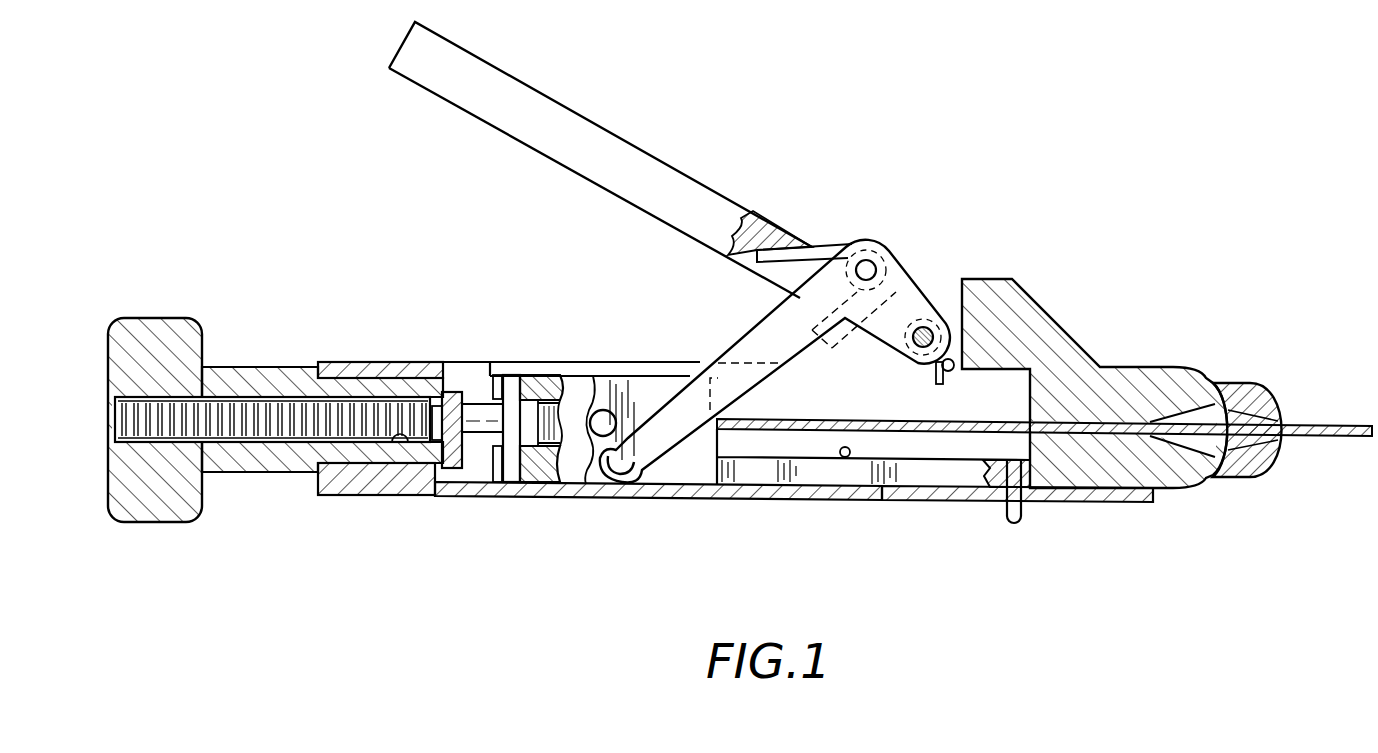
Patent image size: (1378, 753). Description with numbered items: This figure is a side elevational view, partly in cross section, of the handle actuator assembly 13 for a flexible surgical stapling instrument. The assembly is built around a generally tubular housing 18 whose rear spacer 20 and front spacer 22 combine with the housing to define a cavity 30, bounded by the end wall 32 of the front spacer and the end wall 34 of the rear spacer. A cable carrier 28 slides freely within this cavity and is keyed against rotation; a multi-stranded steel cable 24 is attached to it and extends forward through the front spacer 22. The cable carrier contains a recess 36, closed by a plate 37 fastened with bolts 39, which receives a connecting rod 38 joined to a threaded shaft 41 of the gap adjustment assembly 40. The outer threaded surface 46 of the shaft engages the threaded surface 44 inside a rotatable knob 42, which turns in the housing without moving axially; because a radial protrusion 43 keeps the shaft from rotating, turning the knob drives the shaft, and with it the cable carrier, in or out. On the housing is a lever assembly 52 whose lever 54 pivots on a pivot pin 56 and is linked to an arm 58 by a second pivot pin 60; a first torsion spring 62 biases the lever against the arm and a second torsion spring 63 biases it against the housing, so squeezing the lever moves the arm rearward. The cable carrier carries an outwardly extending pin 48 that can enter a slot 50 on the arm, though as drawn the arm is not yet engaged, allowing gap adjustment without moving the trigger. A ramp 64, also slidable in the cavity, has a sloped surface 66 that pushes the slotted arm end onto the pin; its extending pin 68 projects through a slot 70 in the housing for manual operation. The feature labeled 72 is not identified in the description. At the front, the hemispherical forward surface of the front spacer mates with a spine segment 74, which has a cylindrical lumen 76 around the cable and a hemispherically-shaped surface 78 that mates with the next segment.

The handle actuator assembly 13 is at (1096, 367).
The housing 18 is at (526, 498).
The rear spacer 20 is at (401, 362).
The front spacer 22 is at (1068, 352).
The cable 24 is at (846, 420).
The cable carrier 28 is at (622, 378).
The cavity 30 is at (814, 456).
The end wall of the front spacer 32 is at (1030, 388).
The end wall of the rear spacer 34 is at (443, 376).
The recess 36 is at (544, 400).
The plate 37 is at (511, 375).
The connecting rod 38 is at (456, 470).
The bolts 39 is at (496, 375).
The gap adjustment assembly 40 is at (250, 460).
The threaded shaft 41 is at (297, 425).
The rotatable knob 42 is at (198, 318).
The radial protrusion 43 is at (445, 403).
The threaded surface 44 is at (272, 480).
The outer threaded surface 46 is at (400, 448).
The outwardly extending pin 48 is at (602, 409).
The slot 50 is at (592, 468).
The lever assembly 52 is at (788, 236).
The lever 54 is at (620, 163).
The pivot pin 56 is at (912, 360).
The arm 58 is at (760, 346).
The second pivot pin 60 is at (866, 260).
The first torsion spring 62 is at (777, 266).
The second torsion spring 63 is at (932, 380).
The ramp 64 is at (750, 470).
The sloped surface 66 is at (645, 482).
The extending pin 68 is at (1022, 512).
The slot 70 is at (937, 490).
The nose 72 is at (1180, 364).
The spine segment 74 is at (1255, 478).
The cylindrical lumen 76 is at (1278, 448).
The hemispherically-shaped surface 78 is at (1270, 432).